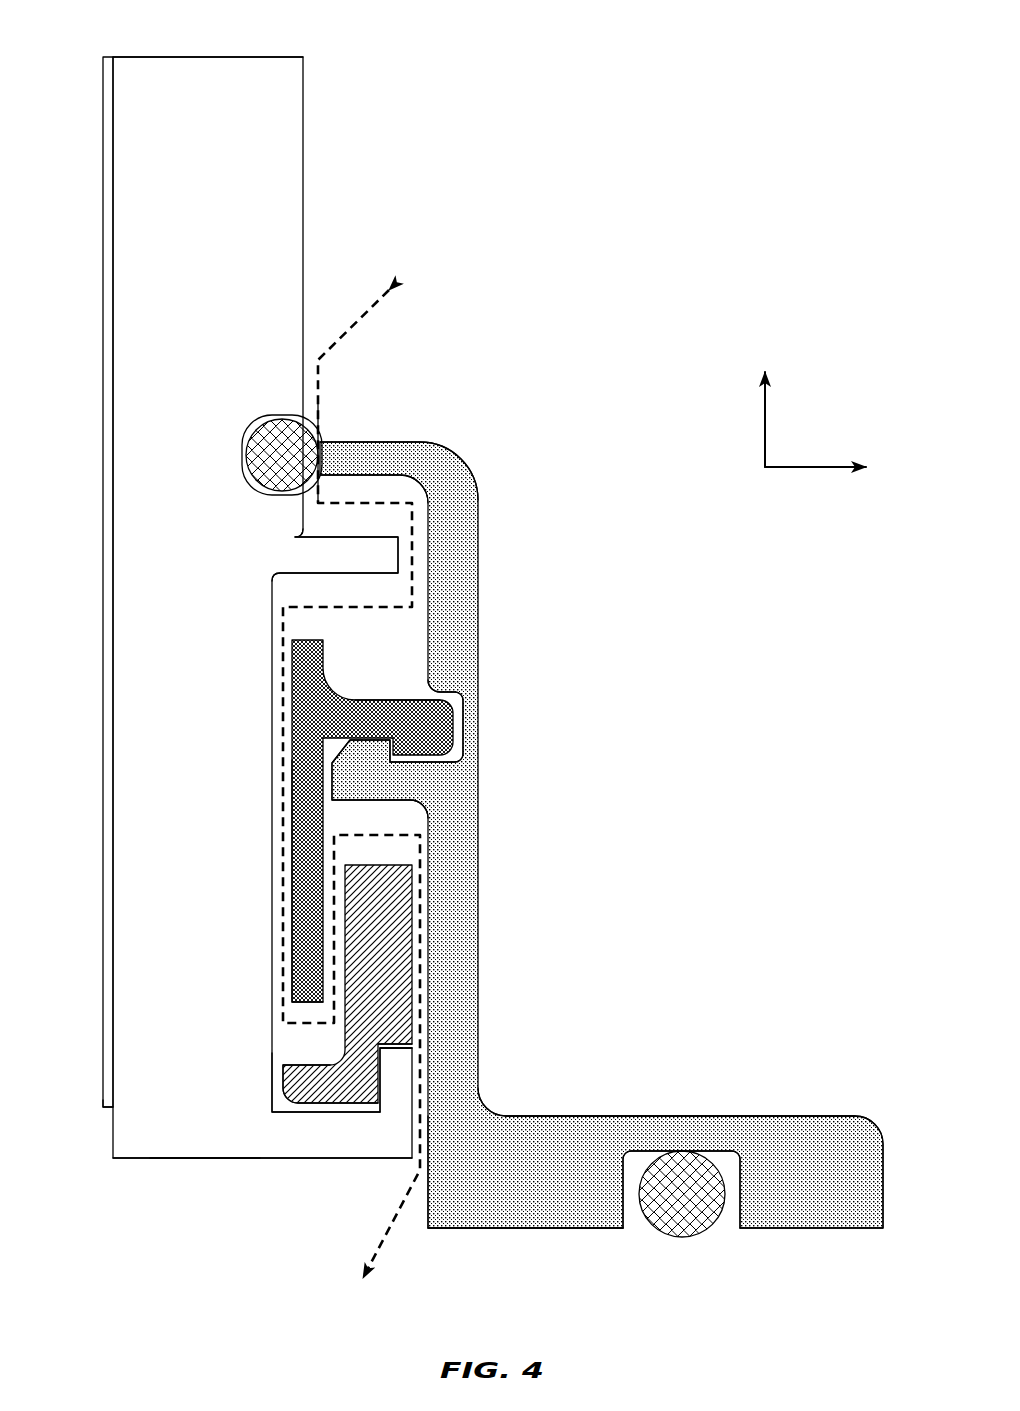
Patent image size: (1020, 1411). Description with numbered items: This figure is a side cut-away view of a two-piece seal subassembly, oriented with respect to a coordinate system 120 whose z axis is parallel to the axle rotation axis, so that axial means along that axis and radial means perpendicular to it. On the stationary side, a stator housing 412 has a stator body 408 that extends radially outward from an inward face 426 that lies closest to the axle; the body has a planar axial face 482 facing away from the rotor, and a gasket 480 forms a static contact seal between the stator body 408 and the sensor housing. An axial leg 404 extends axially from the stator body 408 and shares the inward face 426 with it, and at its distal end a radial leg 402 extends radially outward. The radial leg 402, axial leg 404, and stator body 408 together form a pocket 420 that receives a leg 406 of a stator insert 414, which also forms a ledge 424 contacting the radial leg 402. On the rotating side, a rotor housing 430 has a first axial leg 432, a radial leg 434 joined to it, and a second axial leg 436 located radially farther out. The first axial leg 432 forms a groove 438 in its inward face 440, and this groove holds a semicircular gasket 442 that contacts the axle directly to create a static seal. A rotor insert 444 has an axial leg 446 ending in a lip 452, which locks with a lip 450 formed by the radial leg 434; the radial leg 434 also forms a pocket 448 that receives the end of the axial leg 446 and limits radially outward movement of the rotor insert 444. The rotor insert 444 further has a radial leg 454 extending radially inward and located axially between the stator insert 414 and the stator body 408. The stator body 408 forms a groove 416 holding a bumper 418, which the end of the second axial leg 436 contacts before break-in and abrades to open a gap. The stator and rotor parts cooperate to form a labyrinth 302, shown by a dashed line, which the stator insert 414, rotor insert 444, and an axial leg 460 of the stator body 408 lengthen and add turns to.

The coordinate system 120 is at (851, 373).
The labyrinth 302 is at (281, 618).
The radial leg 402 is at (395, 1080).
The axial leg 404 is at (333, 1160).
The leg 406 is at (298, 1064).
The stator body 408 is at (227, 329).
The stator housing 412 is at (210, 57).
The stator insert 414 is at (394, 919).
The groove 416 is at (330, 420).
The bumper 418 is at (298, 466).
The pocket 420 is at (265, 1053).
The ledge 424 is at (390, 1042).
The inward face 426 is at (194, 1165).
The rotor housing 430 is at (537, 1185).
The first axial leg 432 is at (675, 1116).
The radial leg 434 is at (480, 883).
The second axial leg 436 is at (394, 442).
The groove 438 is at (734, 1230).
The inward face 440 is at (580, 1236).
The semicircular gasket 442 is at (697, 1203).
The rotor insert 444 is at (339, 728).
The axial leg 446 is at (372, 700).
The pocket 448 is at (470, 699).
The lip 450 is at (378, 766).
The lip 452 is at (414, 745).
The radial leg 454 is at (291, 900).
The axial leg 460 is at (322, 553).
The gasket 480 is at (103, 586).
The axial face 482 is at (108, 1123).